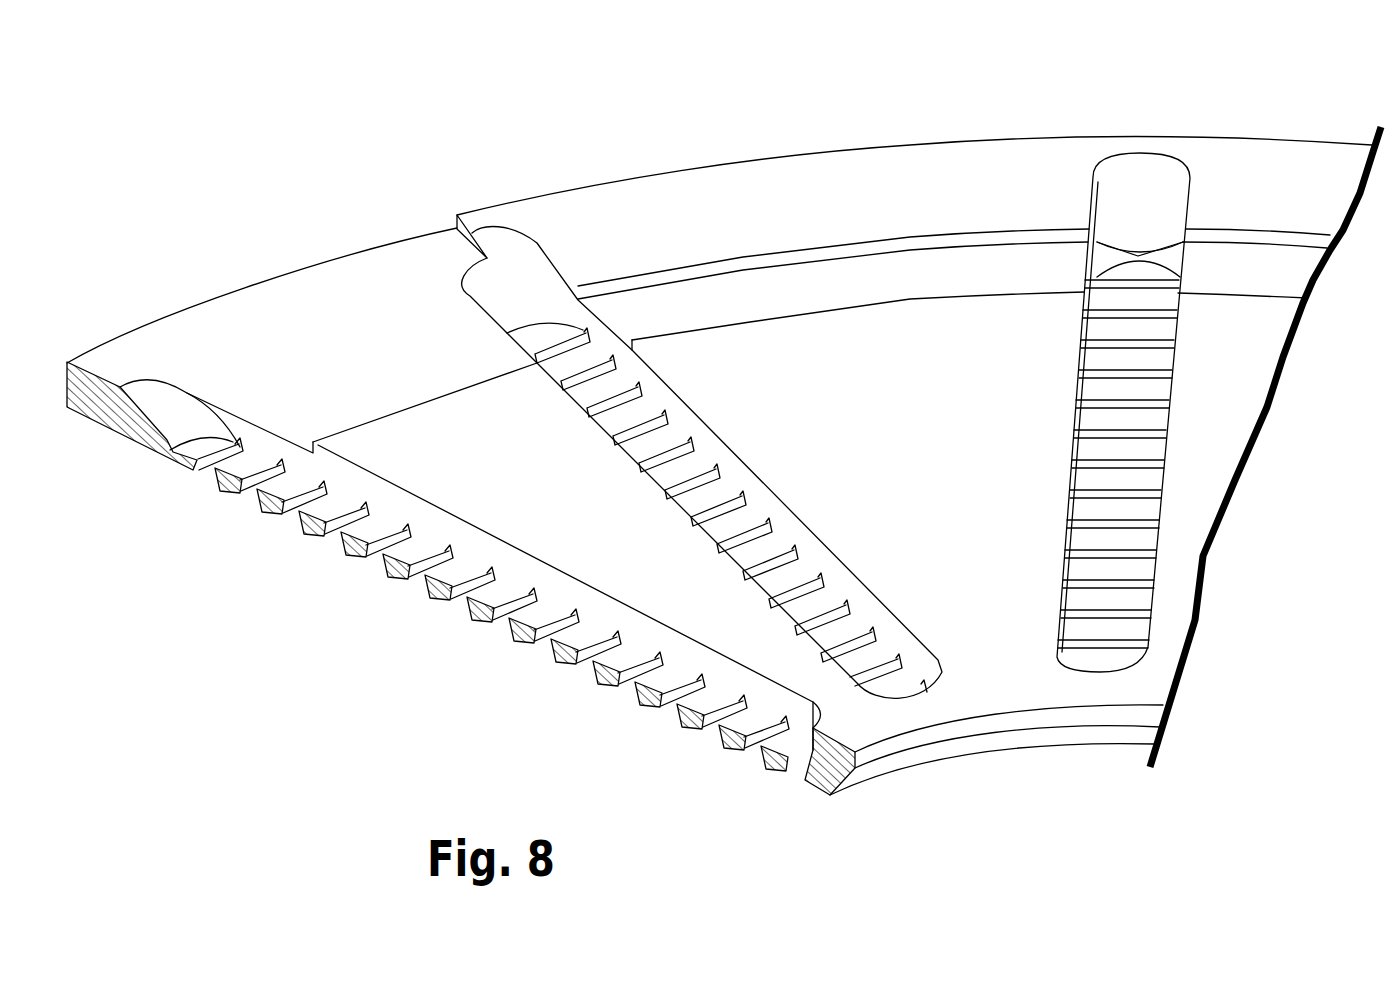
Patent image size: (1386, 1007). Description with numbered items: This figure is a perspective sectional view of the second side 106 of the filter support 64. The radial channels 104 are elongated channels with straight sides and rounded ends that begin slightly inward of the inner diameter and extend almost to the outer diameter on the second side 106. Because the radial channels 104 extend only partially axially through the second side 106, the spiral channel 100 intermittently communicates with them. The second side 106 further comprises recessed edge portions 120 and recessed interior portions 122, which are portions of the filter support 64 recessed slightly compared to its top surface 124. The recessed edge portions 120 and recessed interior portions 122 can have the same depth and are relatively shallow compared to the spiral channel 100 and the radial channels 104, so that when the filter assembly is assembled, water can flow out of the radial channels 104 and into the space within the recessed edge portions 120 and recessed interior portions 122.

The filter support 64 is at (258, 153).
The spiral channel 100 is at (390, 560).
The radial channels 104 is at (741, 469).
The second side 106 is at (229, 314).
The recessed edge portions 120 is at (369, 289).
The recessed interior portions 122 is at (953, 269).
The top surface 124 is at (861, 345).